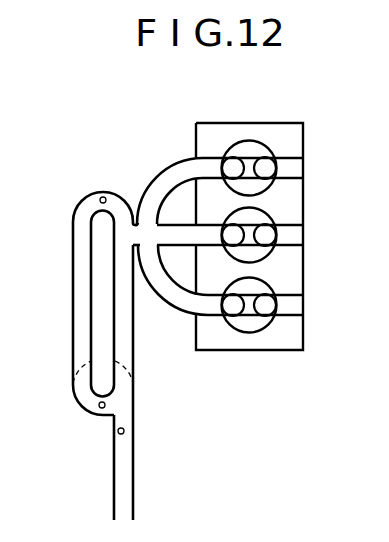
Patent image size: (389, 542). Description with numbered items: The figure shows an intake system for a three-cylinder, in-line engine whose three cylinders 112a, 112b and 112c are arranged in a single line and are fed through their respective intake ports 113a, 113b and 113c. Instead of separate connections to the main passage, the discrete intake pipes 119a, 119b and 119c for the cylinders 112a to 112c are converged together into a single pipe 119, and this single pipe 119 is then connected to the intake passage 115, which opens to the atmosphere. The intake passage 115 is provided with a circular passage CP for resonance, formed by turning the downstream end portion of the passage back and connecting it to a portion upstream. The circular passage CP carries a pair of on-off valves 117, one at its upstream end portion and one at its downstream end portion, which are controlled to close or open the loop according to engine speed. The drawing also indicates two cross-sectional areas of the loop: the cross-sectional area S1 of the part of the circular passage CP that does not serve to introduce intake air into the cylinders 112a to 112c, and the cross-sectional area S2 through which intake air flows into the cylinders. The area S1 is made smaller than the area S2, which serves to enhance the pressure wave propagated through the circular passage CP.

The circular passage CP is at (67, 255).
The on-off valve 117 is at (102, 198).
The intake passage 115 is at (133, 488).
The single pipe 119 is at (124, 431).
The discrete intake pipe 119a is at (171, 162).
The discrete intake pipe 119b is at (171, 197).
The discrete intake pipe 119c is at (167, 304).
The cylinder 112a is at (268, 143).
The cylinder 112b is at (271, 211).
The cylinder 112c is at (272, 282).
The intake port 113a is at (241, 158).
The intake port 113b is at (262, 257).
The intake port 113c is at (268, 324).
The cross-sectional area S1 is at (73, 384).
The cross-sectional area S2 is at (134, 383).